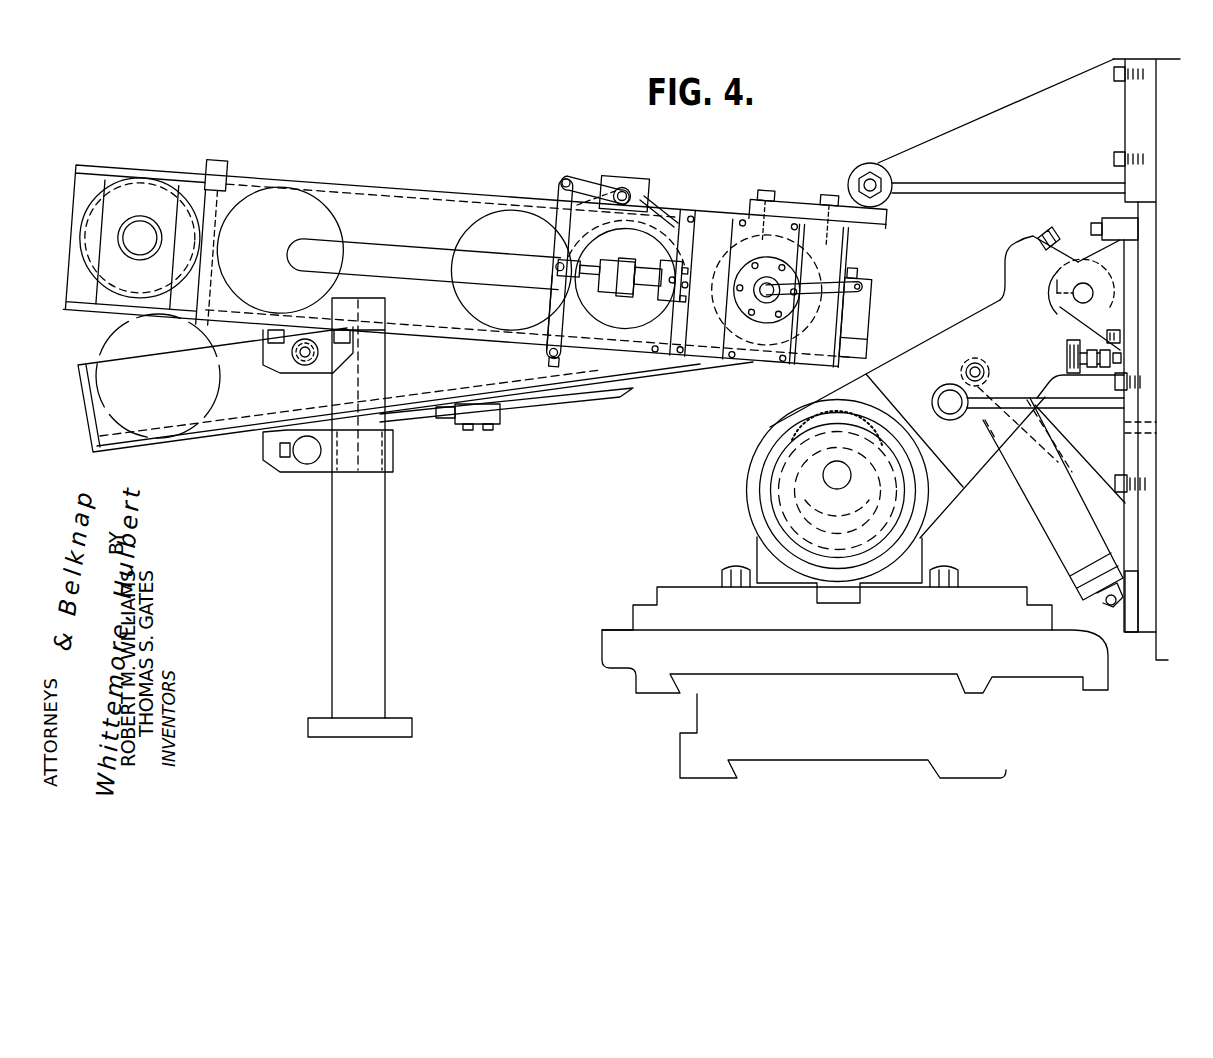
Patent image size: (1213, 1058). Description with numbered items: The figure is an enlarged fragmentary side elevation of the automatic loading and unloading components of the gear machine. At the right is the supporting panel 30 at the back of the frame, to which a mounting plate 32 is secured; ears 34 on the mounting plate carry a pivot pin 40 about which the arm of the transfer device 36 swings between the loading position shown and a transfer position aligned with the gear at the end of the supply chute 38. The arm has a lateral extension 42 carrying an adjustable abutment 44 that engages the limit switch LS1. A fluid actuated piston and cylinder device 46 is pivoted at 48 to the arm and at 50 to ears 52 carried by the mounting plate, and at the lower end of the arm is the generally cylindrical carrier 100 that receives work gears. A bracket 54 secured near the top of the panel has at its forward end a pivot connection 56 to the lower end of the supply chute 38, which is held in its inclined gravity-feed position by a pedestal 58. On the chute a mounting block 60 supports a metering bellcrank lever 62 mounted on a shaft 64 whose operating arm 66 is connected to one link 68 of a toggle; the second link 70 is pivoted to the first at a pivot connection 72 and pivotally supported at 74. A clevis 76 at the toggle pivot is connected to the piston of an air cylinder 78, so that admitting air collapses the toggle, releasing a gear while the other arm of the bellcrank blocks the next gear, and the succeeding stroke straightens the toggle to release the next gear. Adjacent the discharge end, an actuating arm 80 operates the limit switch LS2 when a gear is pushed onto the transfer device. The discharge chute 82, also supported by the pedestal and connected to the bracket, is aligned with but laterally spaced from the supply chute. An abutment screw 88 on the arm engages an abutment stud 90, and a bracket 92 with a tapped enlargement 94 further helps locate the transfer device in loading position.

The supporting panel 30 is at (1167, 58).
The mounting plate 32 is at (1143, 530).
The ears 34 is at (1100, 250).
The transfer device 36 is at (925, 340).
The supply chute 38 is at (310, 183).
The pivot pin 40 is at (1073, 296).
The lateral extension 42 is at (1006, 262).
The adjustable abutment 44 is at (1043, 232).
The fluid actuated piston and cylinder device 46 is at (1028, 509).
The pivot 48 is at (975, 362).
The pivot 50 is at (1104, 603).
The ears 52 is at (1118, 634).
The bracket 54 is at (990, 110).
The pivot connection 56 is at (872, 177).
The pedestal 58 is at (387, 523).
The mounting block 60 is at (648, 190).
The metering bellcrank lever 62 is at (662, 210).
The shaft 64 is at (620, 188).
The operating arm 66 is at (600, 185).
The link 68 is at (558, 241).
The second link 70 is at (550, 305).
The pivot connection 72 is at (557, 268).
The pivotal support 74 is at (548, 350).
The clevis 76 is at (580, 263).
The air cylinder 78 is at (643, 290).
The actuating arm 80 is at (830, 270).
The discharge chute 82 is at (203, 440).
The abutment screw 88 is at (1102, 374).
The abutment stud 90 is at (1122, 357).
The bracket 92 is at (1025, 445).
The tapped enlargement 94 is at (942, 393).
The carrier 100 is at (760, 499).
The limit switch LS1 is at (1138, 214).
The limit switch LS2 is at (868, 310).